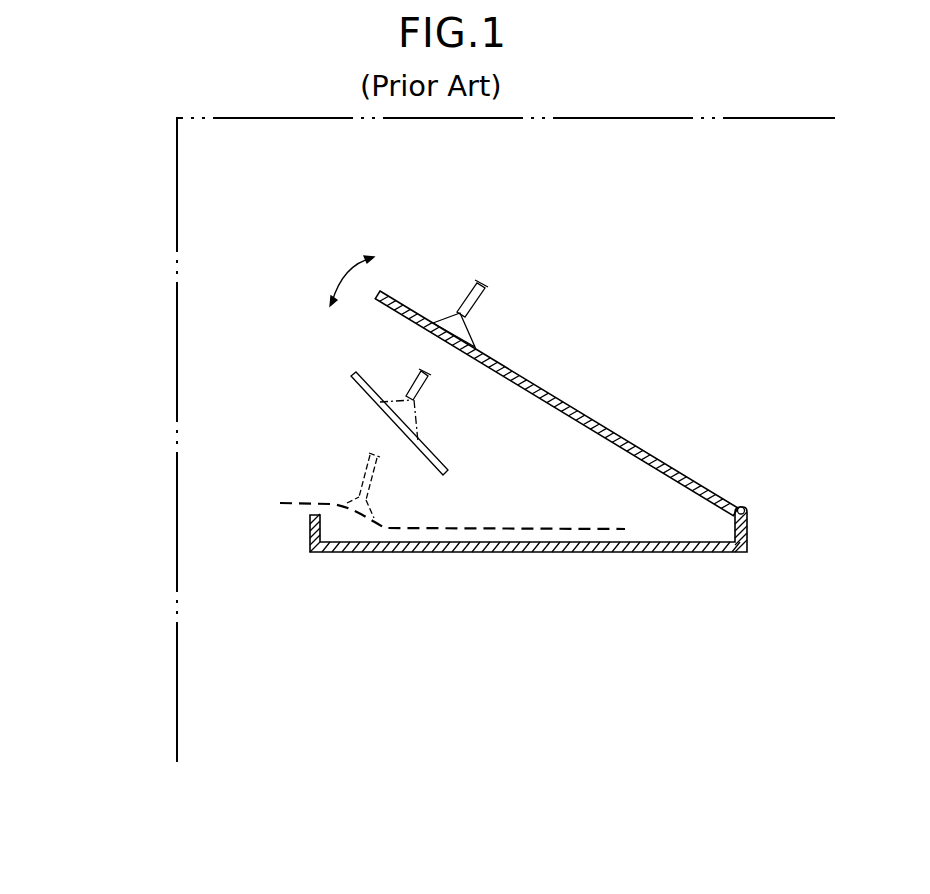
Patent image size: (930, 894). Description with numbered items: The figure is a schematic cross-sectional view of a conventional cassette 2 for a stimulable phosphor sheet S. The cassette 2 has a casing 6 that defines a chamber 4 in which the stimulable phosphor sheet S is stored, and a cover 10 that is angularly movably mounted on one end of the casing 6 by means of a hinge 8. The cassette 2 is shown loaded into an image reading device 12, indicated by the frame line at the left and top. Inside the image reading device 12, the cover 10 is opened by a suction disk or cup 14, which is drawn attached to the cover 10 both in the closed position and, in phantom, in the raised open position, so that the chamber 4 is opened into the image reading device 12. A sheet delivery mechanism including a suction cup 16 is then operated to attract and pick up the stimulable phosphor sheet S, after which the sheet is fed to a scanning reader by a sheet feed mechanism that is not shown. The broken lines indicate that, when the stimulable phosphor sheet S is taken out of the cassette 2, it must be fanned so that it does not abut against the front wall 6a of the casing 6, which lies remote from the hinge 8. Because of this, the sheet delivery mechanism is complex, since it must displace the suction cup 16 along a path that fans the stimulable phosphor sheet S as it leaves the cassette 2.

The cassette 2 is at (392, 553).
The chamber 4 is at (538, 517).
The casing 6 is at (537, 549).
The front wall 6a is at (309, 536).
The hinge 8 is at (745, 506).
The cover 10 is at (601, 420).
The image reading device 12 is at (177, 662).
The suction disk or cup 14 is at (463, 323).
The suction cup 16 is at (350, 502).
The stimulable phosphor sheet S is at (480, 528).